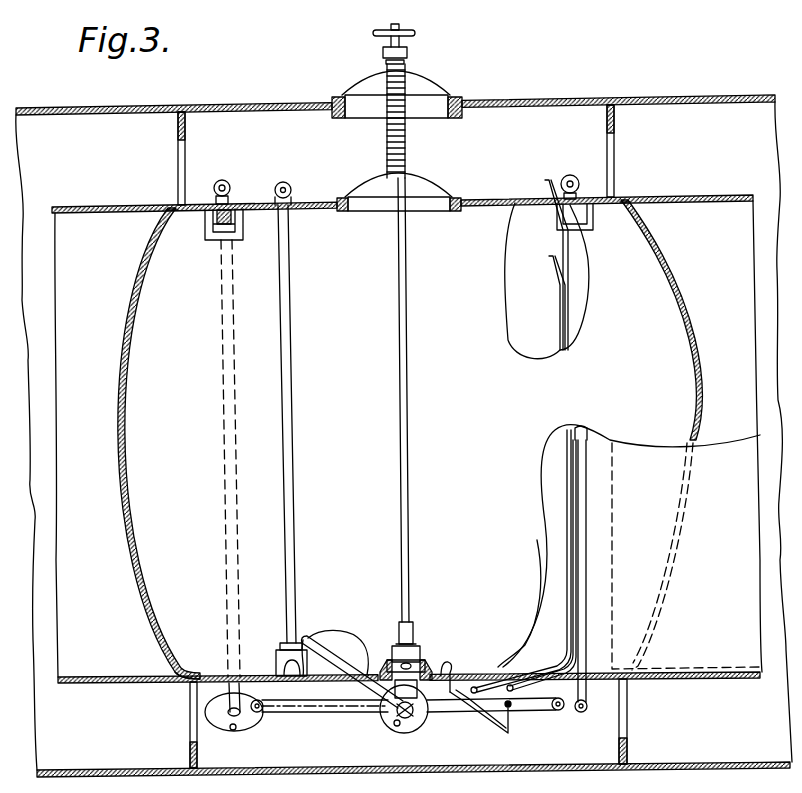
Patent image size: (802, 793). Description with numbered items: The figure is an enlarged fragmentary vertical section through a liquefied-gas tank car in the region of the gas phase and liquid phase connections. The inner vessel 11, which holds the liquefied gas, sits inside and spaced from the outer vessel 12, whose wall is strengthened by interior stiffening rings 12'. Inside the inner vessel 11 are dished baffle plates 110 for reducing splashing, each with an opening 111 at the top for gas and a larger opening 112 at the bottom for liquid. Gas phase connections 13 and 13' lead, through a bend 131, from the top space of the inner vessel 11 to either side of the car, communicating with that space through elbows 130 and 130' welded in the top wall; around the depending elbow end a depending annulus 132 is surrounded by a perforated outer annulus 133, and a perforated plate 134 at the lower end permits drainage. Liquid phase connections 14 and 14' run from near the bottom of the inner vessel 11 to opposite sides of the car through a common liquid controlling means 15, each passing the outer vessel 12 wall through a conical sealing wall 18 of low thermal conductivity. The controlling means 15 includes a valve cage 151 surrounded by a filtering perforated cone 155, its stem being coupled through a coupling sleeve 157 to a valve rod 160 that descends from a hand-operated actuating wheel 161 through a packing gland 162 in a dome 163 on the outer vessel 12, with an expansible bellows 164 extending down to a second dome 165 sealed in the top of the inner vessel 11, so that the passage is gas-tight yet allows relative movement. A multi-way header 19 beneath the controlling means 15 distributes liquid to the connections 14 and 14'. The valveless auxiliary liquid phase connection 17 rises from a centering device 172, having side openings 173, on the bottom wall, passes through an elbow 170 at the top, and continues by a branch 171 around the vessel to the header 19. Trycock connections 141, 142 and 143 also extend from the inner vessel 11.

The inner vessel 11 is at (687, 196).
The outer vessel 12 is at (403, 430).
The stiffening ring 12' is at (411, 419).
The gas phase connection 13 is at (588, 594).
The gas phase connection 13' is at (205, 707).
The liquid phase connection 14 is at (495, 722).
The liquid phase connection 14' is at (317, 726).
The liquid controlling means 15 is at (441, 639).
The auxiliary liquid phase connection 17 is at (292, 245).
The conical sealing wall 18 is at (233, 729).
The multi-way header 19 is at (411, 720).
The dished baffle plate 110 is at (672, 310).
The opening 111 is at (168, 216).
The opening 112 is at (160, 641).
The elbow 130 is at (227, 177).
The elbow 130' is at (575, 186).
The bend 131 is at (567, 431).
The depending annulus 132 is at (218, 240).
The outer annulus 133 is at (232, 242).
The plate 134 is at (250, 458).
The trycock connection 141 is at (560, 236).
The trycock connection 142 is at (560, 305).
The trycock connection 143 is at (494, 723).
The valve cage 151 is at (402, 660).
The perforated cone 155 is at (448, 667).
The coupling sleeve 157 is at (412, 630).
The valve rod 160 is at (409, 519).
The actuating wheel 161 is at (408, 34).
The packing gland 162 is at (408, 58).
The dome 163 is at (440, 92).
The expansible bellows 164 is at (406, 136).
The dome 165 is at (436, 180).
The elbow 170 is at (284, 182).
The branch 171 is at (360, 702).
The centering device 172 is at (280, 643).
The opening 173 is at (278, 671).